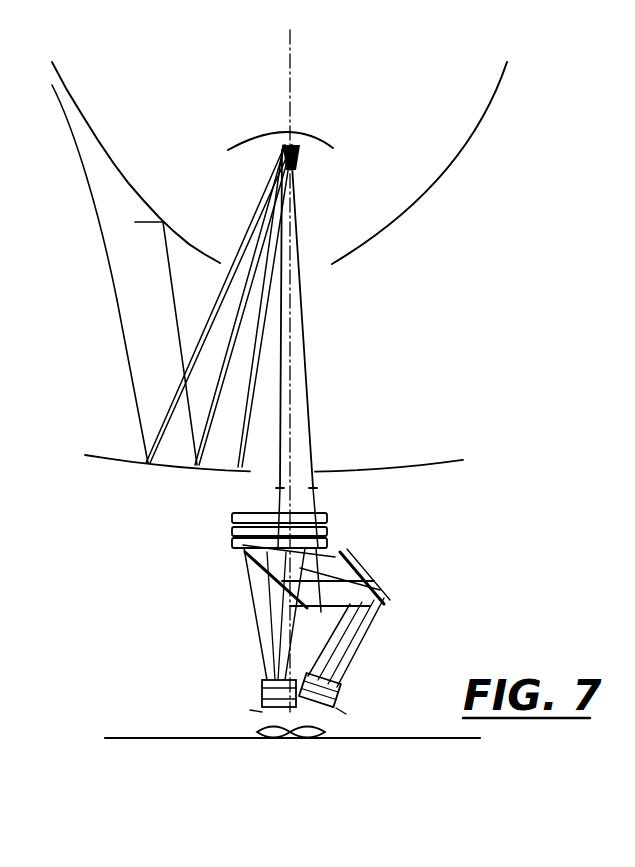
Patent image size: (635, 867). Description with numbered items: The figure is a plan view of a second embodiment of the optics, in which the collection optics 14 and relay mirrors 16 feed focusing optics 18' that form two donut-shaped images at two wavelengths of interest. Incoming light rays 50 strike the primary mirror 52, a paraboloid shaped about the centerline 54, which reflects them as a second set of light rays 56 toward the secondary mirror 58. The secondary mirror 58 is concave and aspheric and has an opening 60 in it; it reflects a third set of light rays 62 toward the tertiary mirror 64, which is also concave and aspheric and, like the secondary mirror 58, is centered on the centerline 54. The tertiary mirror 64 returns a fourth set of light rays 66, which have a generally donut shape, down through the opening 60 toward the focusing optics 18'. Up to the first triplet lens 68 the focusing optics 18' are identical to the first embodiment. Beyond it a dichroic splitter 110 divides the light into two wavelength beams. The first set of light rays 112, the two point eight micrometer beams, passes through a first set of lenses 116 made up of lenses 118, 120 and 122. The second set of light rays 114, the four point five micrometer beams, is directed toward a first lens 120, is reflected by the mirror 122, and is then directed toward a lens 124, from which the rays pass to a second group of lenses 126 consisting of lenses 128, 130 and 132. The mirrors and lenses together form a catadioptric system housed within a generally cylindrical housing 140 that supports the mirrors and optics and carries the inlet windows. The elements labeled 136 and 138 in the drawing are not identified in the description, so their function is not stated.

The collection optics 14 is at (514, 119).
The relay mirrors 16 is at (330, 494).
The focusing optics 18' is at (516, 596).
The light rays 50 is at (58, 92).
The primary mirror 52 is at (443, 173).
The centerline 54 is at (290, 60).
The second set of light rays 56 is at (117, 315).
The secondary mirror 58 is at (147, 468).
The opening 60 is at (262, 470).
The third set of light rays 62 is at (187, 397).
The tertiary mirror 64 is at (308, 133).
The fourth set of light rays 66 is at (300, 192).
The first triplet lens 68 is at (212, 550).
The dichroic splitter 110 is at (268, 592).
The first set of light rays 112 is at (262, 643).
The second set of light rays 114 is at (327, 563).
The first set of lenses 116 is at (247, 701).
The lens 118 is at (262, 690).
The lens 120 is at (327, 557).
The mirror 122 is at (368, 583).
The lens 124 is at (352, 615).
The second group of lenses 126 is at (345, 712).
The lens 128 is at (338, 694).
The lens 130 is at (350, 704).
The lens 132 is at (349, 710).
The base plate 136 is at (153, 738).
The first lens 138 is at (272, 740).
The housing 140 is at (305, 742).